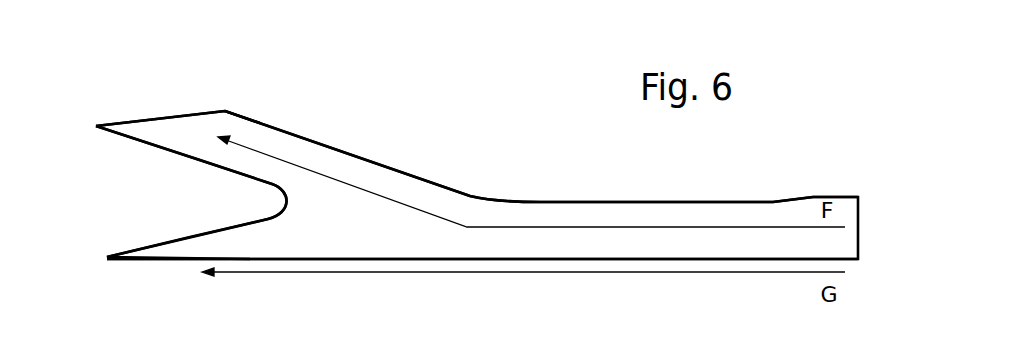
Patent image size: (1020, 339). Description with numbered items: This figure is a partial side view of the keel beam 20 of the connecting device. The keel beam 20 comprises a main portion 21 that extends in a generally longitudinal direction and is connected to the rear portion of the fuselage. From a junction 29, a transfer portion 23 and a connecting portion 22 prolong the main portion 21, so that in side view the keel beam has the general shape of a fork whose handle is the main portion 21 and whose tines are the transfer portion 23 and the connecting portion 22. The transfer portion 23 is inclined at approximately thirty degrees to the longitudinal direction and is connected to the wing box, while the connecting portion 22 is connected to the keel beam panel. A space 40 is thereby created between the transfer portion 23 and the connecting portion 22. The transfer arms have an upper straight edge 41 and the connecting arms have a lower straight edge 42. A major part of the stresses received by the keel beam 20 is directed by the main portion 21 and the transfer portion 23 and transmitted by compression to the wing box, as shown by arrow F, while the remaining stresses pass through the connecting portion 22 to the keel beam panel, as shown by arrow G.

The keel beam 20 is at (433, 133).
The main portion 21 is at (649, 216).
The connecting portion 22 is at (280, 243).
The transfer portion 23 is at (323, 152).
The junction 29 is at (372, 212).
The space 40 is at (217, 210).
The upper straight edge 41 is at (188, 111).
The lower straight edge 42 is at (152, 260).